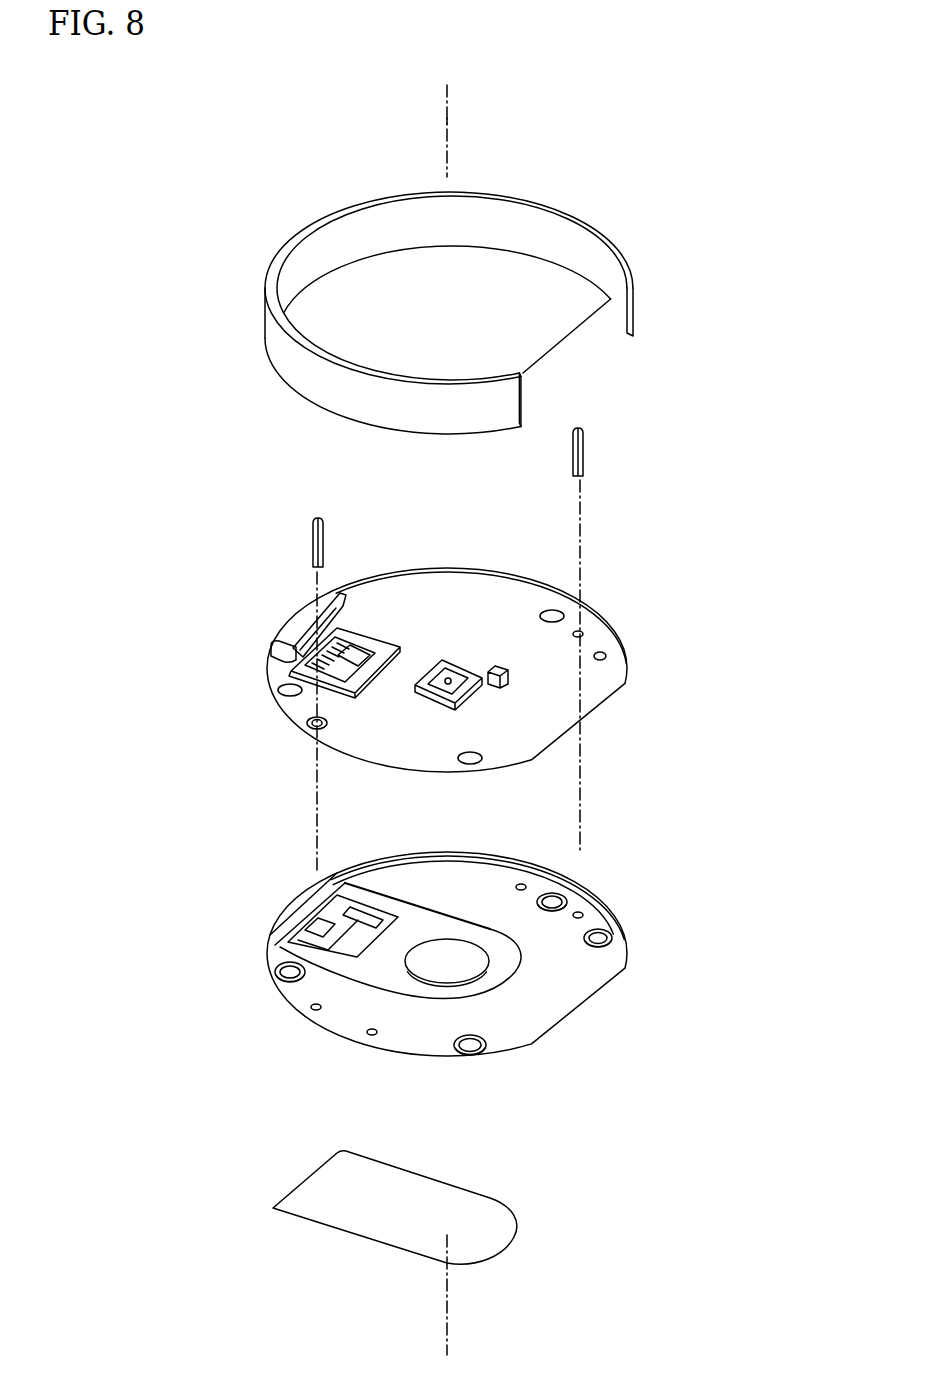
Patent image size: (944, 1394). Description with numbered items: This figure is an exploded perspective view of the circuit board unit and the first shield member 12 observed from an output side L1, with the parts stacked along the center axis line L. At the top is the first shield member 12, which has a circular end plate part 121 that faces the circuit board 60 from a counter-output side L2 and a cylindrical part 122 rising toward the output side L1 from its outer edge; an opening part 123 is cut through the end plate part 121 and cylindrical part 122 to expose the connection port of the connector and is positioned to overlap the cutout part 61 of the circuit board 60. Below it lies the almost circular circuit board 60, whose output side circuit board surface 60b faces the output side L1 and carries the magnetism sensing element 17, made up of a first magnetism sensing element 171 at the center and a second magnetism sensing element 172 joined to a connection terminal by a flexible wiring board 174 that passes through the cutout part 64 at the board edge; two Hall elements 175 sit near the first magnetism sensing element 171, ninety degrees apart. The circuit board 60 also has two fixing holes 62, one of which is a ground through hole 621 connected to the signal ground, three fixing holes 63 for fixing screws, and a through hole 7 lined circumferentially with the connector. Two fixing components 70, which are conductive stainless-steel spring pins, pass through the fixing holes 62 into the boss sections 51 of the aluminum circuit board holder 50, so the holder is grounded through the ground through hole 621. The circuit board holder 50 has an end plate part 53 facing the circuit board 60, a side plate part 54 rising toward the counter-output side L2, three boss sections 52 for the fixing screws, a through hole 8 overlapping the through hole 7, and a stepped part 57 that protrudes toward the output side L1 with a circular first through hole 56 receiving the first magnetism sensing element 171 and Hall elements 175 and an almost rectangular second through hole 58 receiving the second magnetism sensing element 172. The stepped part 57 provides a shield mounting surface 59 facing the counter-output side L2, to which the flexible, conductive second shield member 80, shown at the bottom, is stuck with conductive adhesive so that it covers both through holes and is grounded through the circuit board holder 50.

The first shield member 12 is at (243, 278).
The end plate part 121 is at (530, 278).
The cylindrical part 122 is at (510, 222).
The opening part 123 is at (523, 392).
The center axis line L is at (447, 120).
The output side L1 is at (449, 1309).
The counter-output side L2 is at (449, 115).
The fixing component 70 is at (585, 448).
The circuit board 60 is at (243, 647).
The output side circuit board surface 60b is at (490, 632).
The cutout part 61 is at (617, 692).
The fixing holes 62 is at (583, 632).
The ground through hole 621 is at (312, 730).
The fixing holes 63 is at (552, 610).
The cutout part 64 is at (283, 643).
The through hole 7 is at (606, 656).
The magnetism sensing element 17 is at (198, 733).
The first magnetism sensing element 171 is at (433, 710).
The second magnetism sensing element 172 is at (322, 683).
The flexible wiring board 174 is at (303, 628).
The Hall elements 175 is at (503, 694).
The circuit board holder 50 is at (243, 940).
The boss sections 51 is at (587, 915).
The boss sections 52 is at (577, 902).
The end plate part 53 is at (440, 880).
The side plate part 54 is at (397, 855).
The first through hole 56 is at (437, 975).
The stepped part 57 is at (503, 975).
The second through hole 58 is at (315, 905).
The shield mounting surface 59 is at (395, 967).
The through hole 8 is at (607, 945).
The second shield member 80 is at (290, 1177).